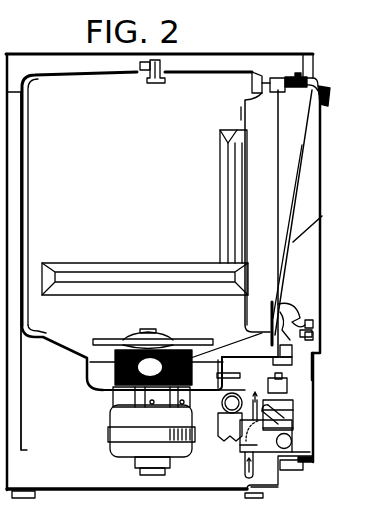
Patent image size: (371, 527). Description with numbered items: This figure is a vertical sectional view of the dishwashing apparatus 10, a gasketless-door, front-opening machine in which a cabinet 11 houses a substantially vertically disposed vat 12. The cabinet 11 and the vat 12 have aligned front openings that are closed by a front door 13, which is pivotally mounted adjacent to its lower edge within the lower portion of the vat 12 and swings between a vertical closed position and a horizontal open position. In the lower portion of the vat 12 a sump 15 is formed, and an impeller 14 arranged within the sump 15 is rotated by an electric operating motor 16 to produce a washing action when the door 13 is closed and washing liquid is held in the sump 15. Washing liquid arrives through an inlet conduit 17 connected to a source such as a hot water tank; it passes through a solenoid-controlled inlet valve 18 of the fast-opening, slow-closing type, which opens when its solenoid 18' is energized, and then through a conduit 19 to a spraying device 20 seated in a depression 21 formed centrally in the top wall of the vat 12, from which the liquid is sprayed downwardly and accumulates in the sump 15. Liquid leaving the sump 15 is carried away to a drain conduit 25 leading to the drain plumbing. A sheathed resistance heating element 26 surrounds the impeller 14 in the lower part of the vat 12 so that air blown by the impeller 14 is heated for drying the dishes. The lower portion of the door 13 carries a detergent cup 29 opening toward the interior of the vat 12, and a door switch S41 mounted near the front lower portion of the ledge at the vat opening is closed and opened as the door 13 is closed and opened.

The dishwashing apparatus 10 is at (222, 46).
The cabinet 11 is at (20, 54).
The vat 12 is at (28, 173).
The front door 13 is at (322, 173).
The impeller 14 is at (155, 335).
The sump 15 is at (87, 383).
The electric operating motor 16 is at (187, 457).
The inlet conduit 17 is at (253, 471).
The inlet valve 18 is at (294, 435).
The solenoid 18' is at (237, 438).
The conduit 19 is at (267, 415).
The spraying device 20 is at (157, 84).
The depression 21 is at (172, 82).
The drain conduit 25 is at (240, 415).
The heating element 26 is at (113, 342).
The detergent cup 29 is at (277, 320).
The door switch S41 is at (313, 335).